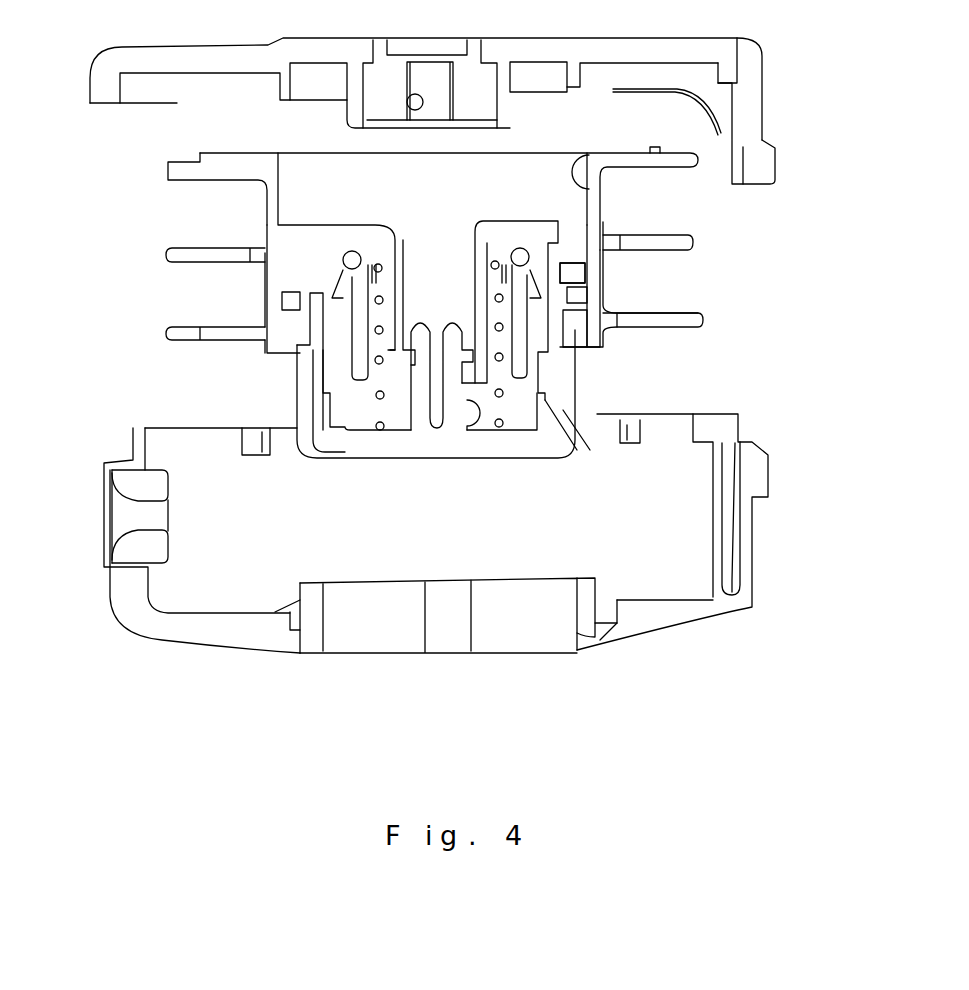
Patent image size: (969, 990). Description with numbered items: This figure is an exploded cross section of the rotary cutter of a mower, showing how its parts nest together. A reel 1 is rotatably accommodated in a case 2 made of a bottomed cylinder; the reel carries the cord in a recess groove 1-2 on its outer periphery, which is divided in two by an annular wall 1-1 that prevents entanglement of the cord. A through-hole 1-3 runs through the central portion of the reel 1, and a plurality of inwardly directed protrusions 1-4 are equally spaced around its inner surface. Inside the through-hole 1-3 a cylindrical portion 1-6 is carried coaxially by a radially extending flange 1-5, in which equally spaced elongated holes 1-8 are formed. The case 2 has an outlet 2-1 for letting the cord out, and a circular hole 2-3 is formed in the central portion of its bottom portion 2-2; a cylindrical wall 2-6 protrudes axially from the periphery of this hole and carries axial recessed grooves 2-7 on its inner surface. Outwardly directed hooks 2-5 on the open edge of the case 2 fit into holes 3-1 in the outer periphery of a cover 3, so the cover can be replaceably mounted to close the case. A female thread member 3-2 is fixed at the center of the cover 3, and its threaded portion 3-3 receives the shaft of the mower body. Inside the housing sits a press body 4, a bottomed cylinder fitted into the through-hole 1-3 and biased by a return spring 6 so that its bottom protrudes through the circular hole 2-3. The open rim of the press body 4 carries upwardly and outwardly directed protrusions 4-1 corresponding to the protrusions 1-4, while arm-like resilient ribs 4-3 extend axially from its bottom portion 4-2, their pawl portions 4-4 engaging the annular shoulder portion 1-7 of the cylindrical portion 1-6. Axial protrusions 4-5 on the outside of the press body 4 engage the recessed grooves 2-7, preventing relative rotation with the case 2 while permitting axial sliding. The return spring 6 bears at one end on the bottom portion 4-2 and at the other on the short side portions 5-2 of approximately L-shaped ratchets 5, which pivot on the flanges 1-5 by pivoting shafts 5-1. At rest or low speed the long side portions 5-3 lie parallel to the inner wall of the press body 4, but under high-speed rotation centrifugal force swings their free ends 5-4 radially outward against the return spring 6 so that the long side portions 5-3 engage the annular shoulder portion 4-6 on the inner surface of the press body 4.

The reel 1 is at (597, 320).
The annular wall 1-1 is at (695, 240).
The recess groove 1-2 is at (660, 305).
The through-hole 1-3 is at (587, 158).
The protrusions 1-4 is at (287, 300).
The flange 1-5 is at (316, 235).
The cylindrical portion 1-6 is at (403, 243).
The annular shoulder portion 1-7 is at (405, 340).
The elongated holes 1-8 is at (580, 218).
The case 2 is at (728, 608).
The outlet 2-1 is at (132, 487).
The bottom portion 2-2 is at (615, 630).
The circular hole 2-3 is at (530, 630).
The hooks 2-5 is at (757, 475).
The cylindrical wall 2-6 is at (283, 613).
The recessed grooves 2-7 is at (312, 630).
The cover 3 is at (692, 50).
The holes 3-1 is at (723, 117).
The female thread member 3-2 is at (470, 87).
The threaded portion 3-3 is at (418, 92).
The press body 4 is at (573, 397).
The protrusions 4-1 is at (575, 268).
The bottom portion 4-2 is at (478, 445).
The resilient ribs 4-3 is at (467, 427).
The pawl portions 4-4 is at (463, 333).
The protrusions 4-5 is at (307, 437).
The annular shoulder portion 4-6 is at (577, 450).
The ratchets 5 is at (357, 333).
The pivoting shafts 5-1 is at (313, 263).
The short side portions 5-2 is at (367, 258).
The long side portions 5-3 is at (517, 352).
The free ends 5-4 is at (517, 352).
The return spring 6 is at (375, 396).